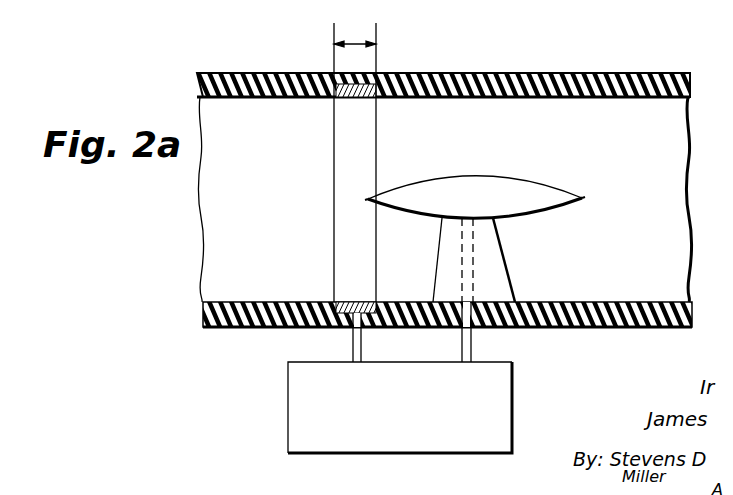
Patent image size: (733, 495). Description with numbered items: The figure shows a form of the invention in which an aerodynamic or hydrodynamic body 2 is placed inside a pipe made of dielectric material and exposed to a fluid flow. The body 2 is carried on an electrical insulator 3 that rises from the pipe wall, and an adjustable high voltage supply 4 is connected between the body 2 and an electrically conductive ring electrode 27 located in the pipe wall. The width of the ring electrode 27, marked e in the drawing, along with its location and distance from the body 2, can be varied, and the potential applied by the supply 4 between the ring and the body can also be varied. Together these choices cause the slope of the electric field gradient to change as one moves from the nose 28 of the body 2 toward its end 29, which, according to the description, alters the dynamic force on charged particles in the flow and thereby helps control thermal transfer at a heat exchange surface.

The aerodynamic or hydrodynamic body 2 is at (478, 181).
The electrical insulator 3 is at (497, 257).
The adjustable high voltage supply 4 is at (502, 398).
The ring electrode 27 is at (338, 88).
The nose 28 is at (368, 199).
The end 29 is at (584, 198).